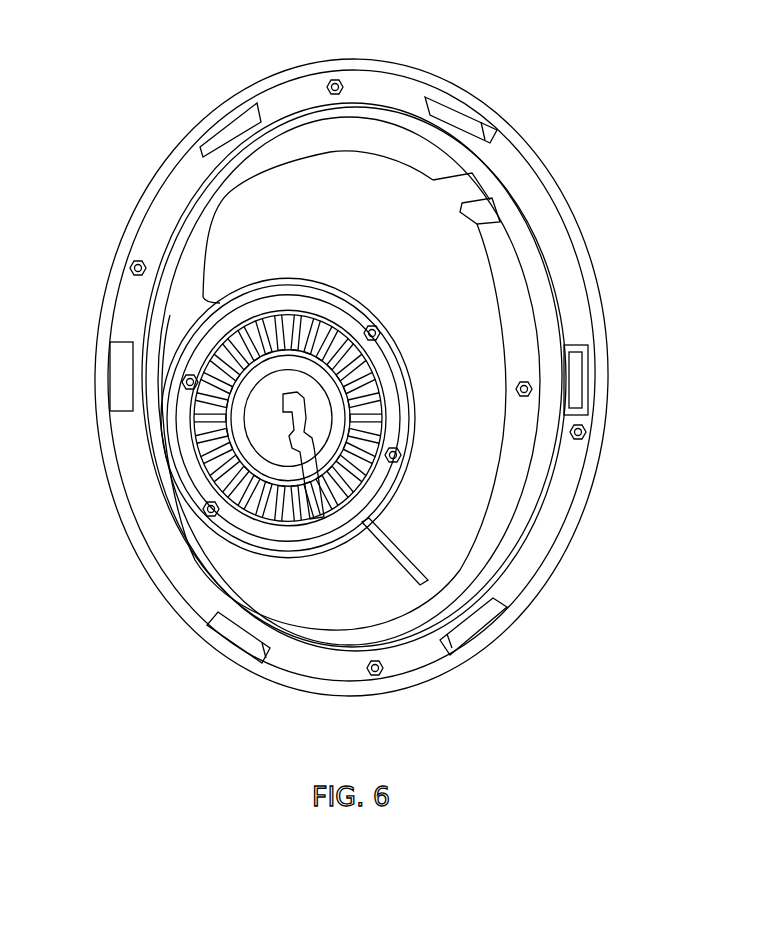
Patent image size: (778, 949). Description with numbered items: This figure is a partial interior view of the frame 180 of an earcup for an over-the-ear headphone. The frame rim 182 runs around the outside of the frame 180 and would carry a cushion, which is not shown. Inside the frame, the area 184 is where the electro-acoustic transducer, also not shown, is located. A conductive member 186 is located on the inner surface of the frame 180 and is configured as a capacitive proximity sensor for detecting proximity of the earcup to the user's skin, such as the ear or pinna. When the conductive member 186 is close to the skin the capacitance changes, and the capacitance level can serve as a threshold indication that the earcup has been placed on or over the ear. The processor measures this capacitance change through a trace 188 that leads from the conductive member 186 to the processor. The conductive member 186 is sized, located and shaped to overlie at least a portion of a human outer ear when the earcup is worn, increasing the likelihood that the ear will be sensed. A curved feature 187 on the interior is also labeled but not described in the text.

The frame 180 is at (280, 70).
The frame rim 182 is at (385, 88).
The area 184 is at (205, 443).
The conductive member 186 is at (470, 333).
The curved rib 187 is at (257, 177).
The trace 188 is at (490, 190).